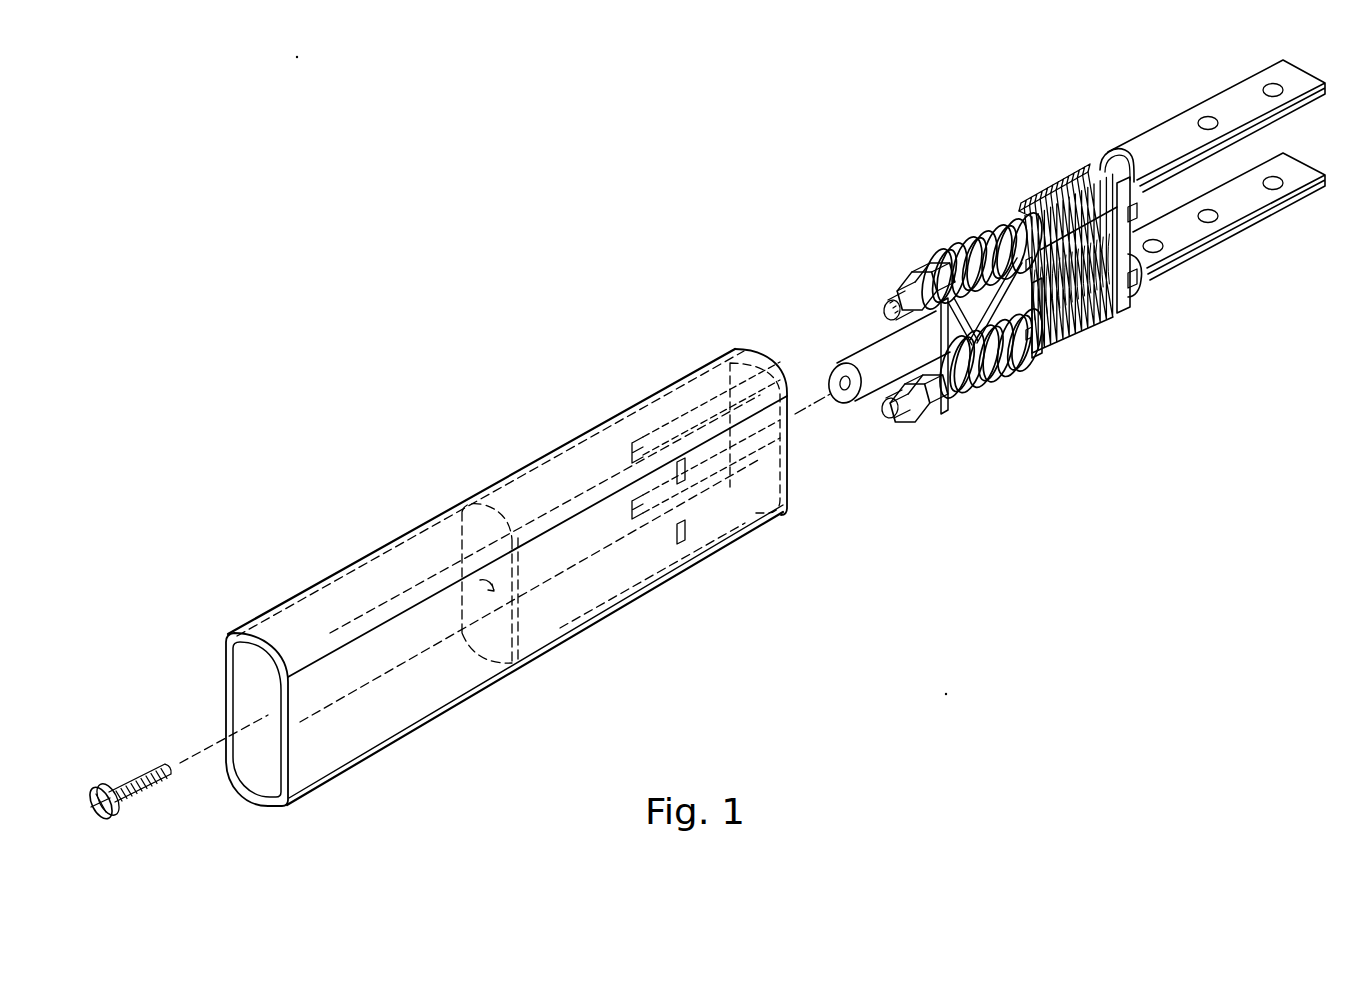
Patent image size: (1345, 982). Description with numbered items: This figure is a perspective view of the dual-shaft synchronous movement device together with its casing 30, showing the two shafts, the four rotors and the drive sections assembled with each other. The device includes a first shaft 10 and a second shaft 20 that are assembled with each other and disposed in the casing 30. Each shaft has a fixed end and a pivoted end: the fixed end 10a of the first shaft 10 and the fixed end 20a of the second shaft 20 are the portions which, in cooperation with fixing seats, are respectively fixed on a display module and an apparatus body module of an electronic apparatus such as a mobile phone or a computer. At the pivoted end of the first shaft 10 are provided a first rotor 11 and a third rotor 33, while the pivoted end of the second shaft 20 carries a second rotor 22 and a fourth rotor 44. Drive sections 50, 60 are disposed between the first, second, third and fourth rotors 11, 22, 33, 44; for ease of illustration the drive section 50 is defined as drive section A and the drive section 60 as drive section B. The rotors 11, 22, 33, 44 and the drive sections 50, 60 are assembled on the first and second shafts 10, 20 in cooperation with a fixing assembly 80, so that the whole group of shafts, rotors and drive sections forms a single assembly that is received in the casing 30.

The first shaft 10 is at (1100, 137).
The fixed end of the first shaft 10a is at (1180, 130).
The first rotor 11 is at (921, 240).
The second shaft 20 is at (1186, 282).
The fixed end of the second shaft 20a is at (1230, 238).
The second rotor 22 is at (963, 425).
The casing 30 is at (493, 479).
The third rotor 33 is at (981, 208).
The fourth rotor 44 is at (1020, 390).
The drive section 50 is at (970, 397).
The drive section 60 is at (1063, 348).
The fixing assembly 80 is at (880, 250).